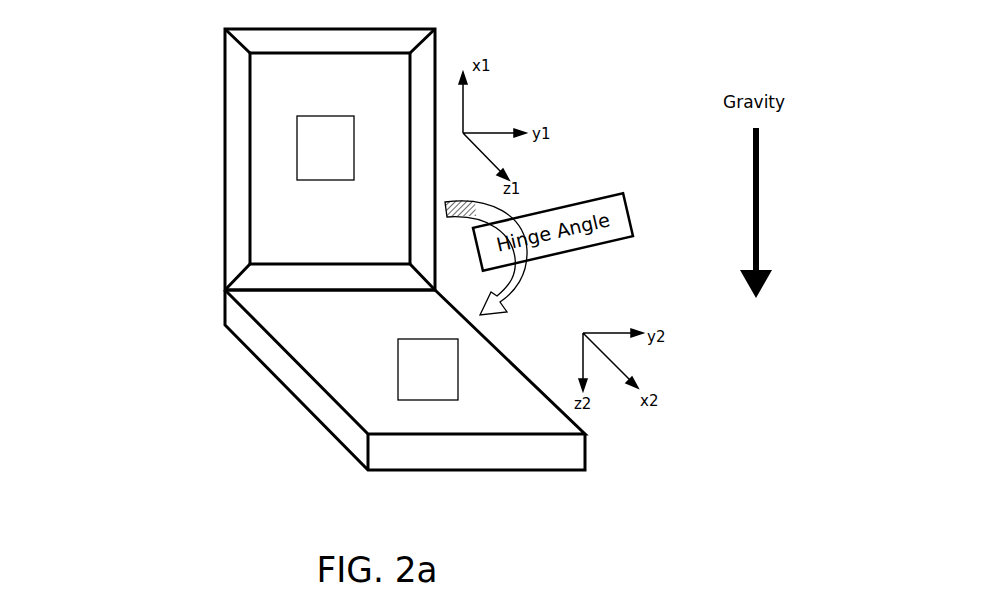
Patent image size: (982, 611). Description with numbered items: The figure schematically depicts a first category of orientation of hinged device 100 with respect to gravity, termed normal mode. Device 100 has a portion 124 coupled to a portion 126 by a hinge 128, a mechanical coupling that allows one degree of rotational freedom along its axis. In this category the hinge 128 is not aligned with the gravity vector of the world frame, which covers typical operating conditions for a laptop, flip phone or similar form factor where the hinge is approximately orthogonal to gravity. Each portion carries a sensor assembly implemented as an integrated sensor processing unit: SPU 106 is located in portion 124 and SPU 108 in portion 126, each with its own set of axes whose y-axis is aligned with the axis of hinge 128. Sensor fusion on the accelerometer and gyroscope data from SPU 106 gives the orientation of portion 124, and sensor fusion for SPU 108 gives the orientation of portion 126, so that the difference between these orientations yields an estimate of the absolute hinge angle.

The device 100 is at (158, 160).
The portion 124 is at (224, 93).
The portion 126 is at (283, 387).
The hinge 128 is at (224, 291).
The sensor processing unit 106 is at (325, 148).
The sensor processing unit 108 is at (428, 369).